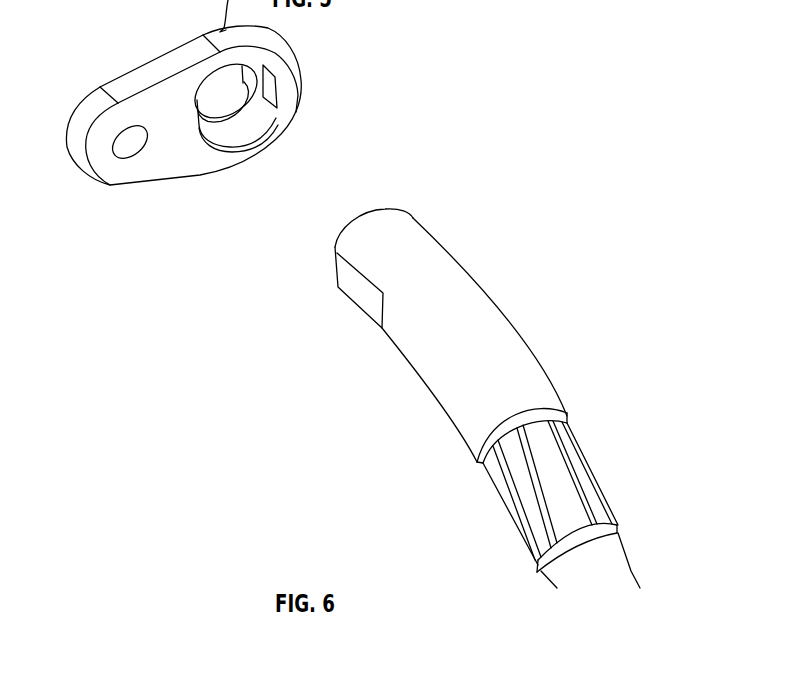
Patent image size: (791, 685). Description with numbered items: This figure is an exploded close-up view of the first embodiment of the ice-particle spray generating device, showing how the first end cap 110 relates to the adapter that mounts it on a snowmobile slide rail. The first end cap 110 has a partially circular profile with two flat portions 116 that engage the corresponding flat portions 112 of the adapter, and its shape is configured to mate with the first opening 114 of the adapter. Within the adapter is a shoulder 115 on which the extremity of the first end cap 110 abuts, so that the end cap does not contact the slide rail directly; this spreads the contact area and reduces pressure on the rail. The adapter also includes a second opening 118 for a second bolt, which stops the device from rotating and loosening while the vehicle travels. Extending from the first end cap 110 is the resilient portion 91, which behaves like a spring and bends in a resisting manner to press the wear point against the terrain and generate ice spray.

The resilient portion 91 is at (617, 568).
The first end cap 110 is at (482, 310).
The flat portions 112 is at (337, 268).
The first opening 114 is at (206, 143).
The shoulder 115 is at (248, 113).
The flat portions 116 is at (267, 90).
The second opening 118 is at (123, 133).